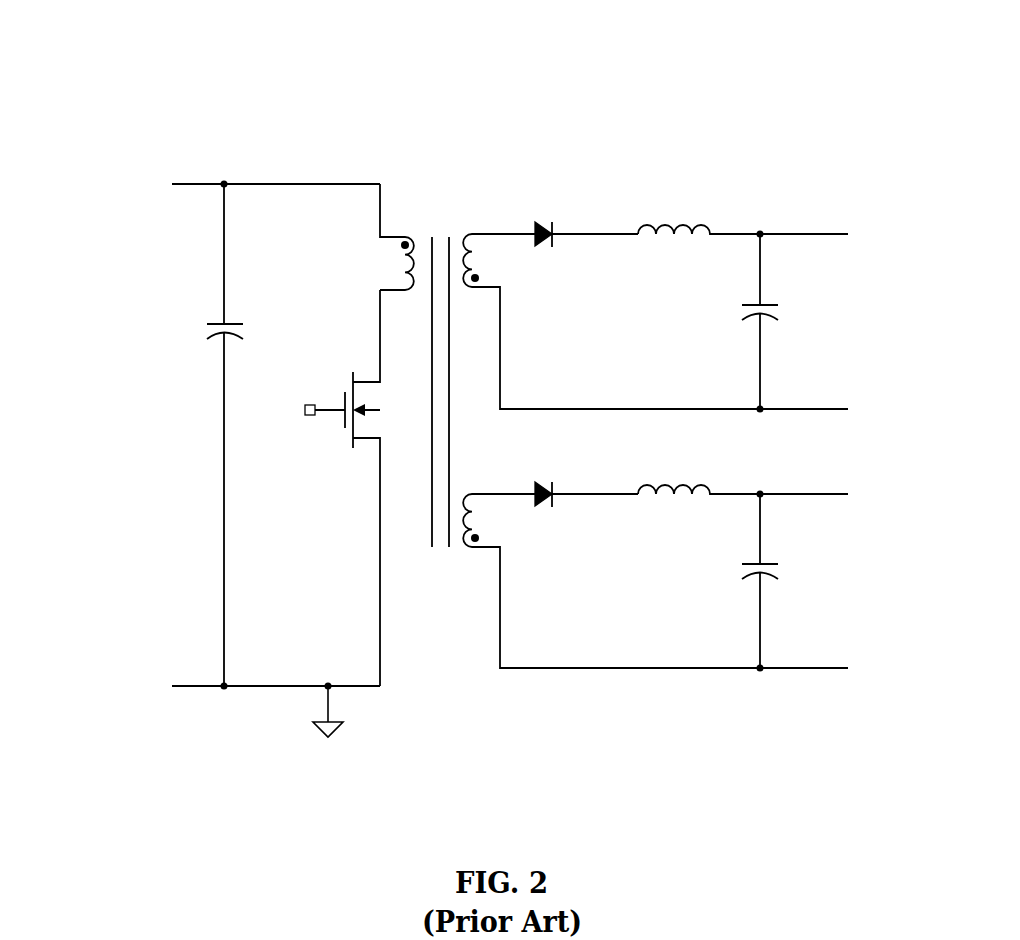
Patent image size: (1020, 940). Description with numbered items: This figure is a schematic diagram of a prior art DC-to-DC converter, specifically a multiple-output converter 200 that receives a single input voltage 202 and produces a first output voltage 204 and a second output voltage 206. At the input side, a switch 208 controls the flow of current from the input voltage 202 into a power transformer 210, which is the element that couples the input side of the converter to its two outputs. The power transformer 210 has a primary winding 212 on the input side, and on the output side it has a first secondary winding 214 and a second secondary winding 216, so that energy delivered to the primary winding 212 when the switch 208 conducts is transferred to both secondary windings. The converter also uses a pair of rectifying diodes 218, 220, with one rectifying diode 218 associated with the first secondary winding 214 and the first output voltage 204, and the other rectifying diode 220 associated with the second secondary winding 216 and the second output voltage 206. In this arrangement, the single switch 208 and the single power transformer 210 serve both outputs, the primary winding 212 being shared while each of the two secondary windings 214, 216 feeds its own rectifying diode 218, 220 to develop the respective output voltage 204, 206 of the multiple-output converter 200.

The multiple-output converter 200 is at (213, 61).
The input voltage 202 is at (182, 180).
The first output voltage 204 is at (832, 238).
The second output voltage 206 is at (832, 500).
The switch 208 is at (334, 468).
The power transformer 210 is at (469, 153).
The primary winding 212 is at (379, 250).
The first secondary winding 214 is at (494, 252).
The second secondary winding 216 is at (493, 540).
The rectifying diode 218 is at (572, 207).
The rectifying diode 220 is at (563, 505).